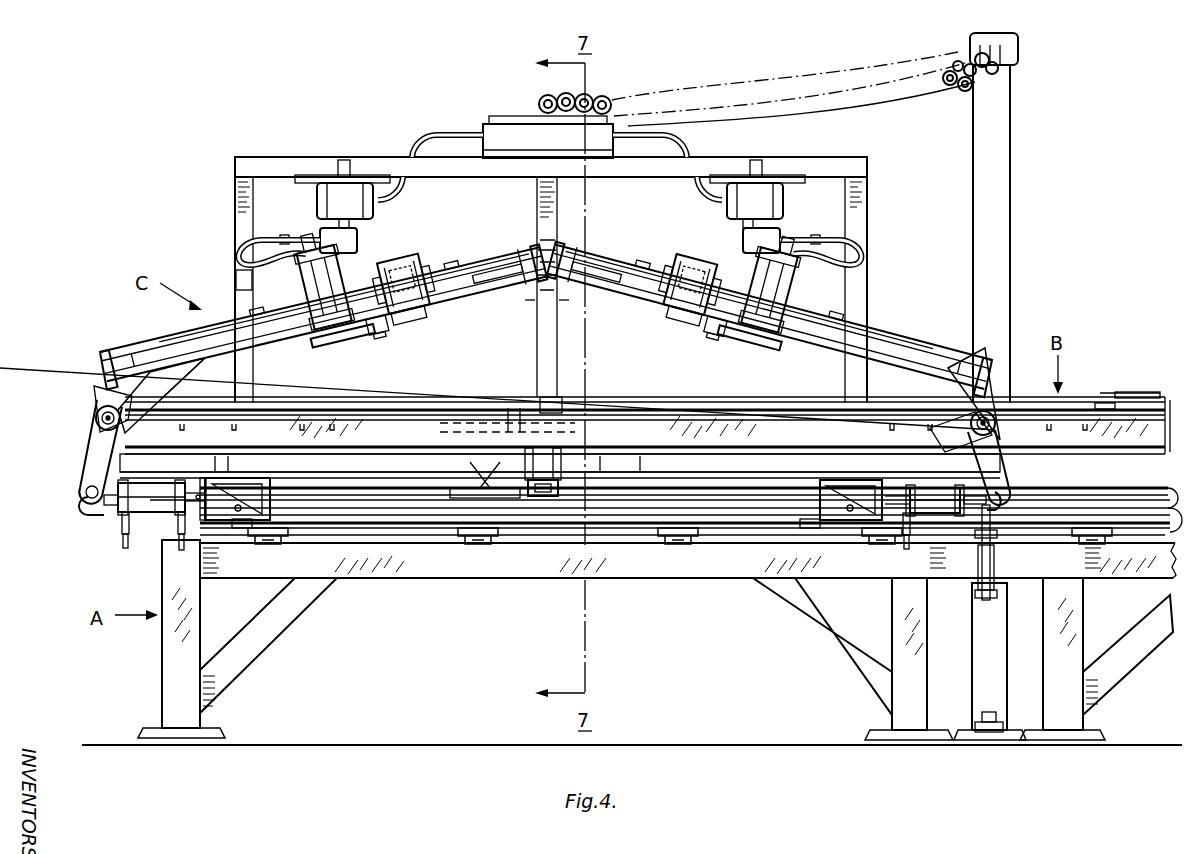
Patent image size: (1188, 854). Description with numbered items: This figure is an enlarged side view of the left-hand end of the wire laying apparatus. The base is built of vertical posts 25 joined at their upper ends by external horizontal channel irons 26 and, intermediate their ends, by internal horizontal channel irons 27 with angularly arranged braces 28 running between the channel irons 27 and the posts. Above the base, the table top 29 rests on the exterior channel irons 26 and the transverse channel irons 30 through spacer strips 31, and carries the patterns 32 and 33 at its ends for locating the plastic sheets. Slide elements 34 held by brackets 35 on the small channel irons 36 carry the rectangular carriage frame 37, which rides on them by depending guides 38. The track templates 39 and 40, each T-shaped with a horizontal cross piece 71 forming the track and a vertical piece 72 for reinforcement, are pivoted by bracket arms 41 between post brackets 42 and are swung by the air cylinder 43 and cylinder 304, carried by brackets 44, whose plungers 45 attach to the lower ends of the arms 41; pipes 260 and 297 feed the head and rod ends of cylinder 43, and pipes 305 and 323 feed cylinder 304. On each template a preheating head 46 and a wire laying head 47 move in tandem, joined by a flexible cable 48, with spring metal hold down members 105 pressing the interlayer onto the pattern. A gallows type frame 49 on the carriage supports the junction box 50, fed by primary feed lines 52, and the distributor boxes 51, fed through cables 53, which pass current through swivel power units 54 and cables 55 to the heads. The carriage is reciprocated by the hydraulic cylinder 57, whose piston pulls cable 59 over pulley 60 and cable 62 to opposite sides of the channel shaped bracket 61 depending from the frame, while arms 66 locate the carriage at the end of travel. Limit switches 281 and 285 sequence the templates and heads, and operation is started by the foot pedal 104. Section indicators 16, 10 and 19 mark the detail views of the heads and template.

The vertical posts 25 is at (175, 670).
The external horizontal channel irons 26 is at (346, 440).
The internal horizontal channel irons 27 is at (636, 560).
The angularly arranged braces 28 is at (240, 655).
The table top 29 is at (1069, 392).
The transverse channel irons 30 is at (492, 404).
The spacer strips 31 is at (537, 413).
The pattern 32 is at (607, 406).
The pattern 33 is at (1122, 402).
The slide elements 34 is at (426, 548).
The brackets 35 is at (277, 534).
The small channel irons 36 is at (634, 531).
The carriage frame 37 is at (746, 469).
The guides 38 is at (240, 512).
The track template 39 is at (158, 337).
The track template 40 is at (919, 343).
The supporting bracket arms 41 is at (95, 462).
The post brackets 42 is at (128, 425).
The air cylinder 43 is at (152, 505).
The brackets 44 is at (232, 490).
The plungers 45 is at (88, 498).
The preheating head 46 is at (412, 262).
The wire laying head 47 is at (318, 335).
The flexible cable 48 is at (352, 262).
The gallows type frame 49 is at (236, 277).
The junction box 50 is at (505, 146).
The distributor boxes 51 is at (341, 200).
The primary feed lines 52 is at (599, 117).
The cables 53 is at (436, 134).
The swivel power units 54 is at (333, 240).
The cables 55 is at (240, 240).
The hydraulic cylinder 57 is at (540, 548).
The cable 59 is at (505, 490).
The pulley 60 is at (472, 488).
The channel shaped bracket 61 is at (562, 479).
The cable 62 is at (613, 487).
The arms 66 is at (566, 366).
The cross piece 71 is at (216, 328).
The vertical piece 72 is at (209, 362).
The foot pedal 104 is at (982, 728).
The hold down members 105 is at (489, 288).
The pipe 260 is at (180, 540).
The limit switch 281 is at (422, 320).
The limit switch 285 is at (385, 337).
The pipe 297 is at (125, 535).
The cylinder 304 is at (942, 498).
The pipe 305 is at (905, 553).
The pipe 323 is at (968, 575).
The section indicator 16 is at (718, 244).
The section indicator 10 is at (792, 338).
The section indicator 19 is at (810, 292).